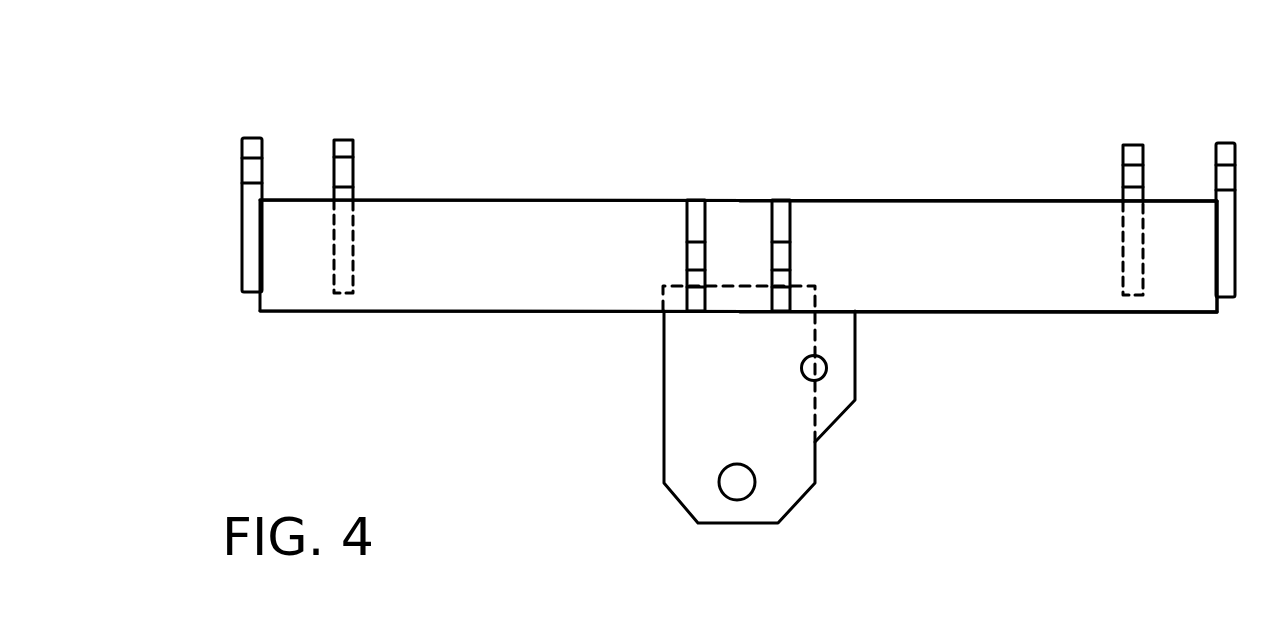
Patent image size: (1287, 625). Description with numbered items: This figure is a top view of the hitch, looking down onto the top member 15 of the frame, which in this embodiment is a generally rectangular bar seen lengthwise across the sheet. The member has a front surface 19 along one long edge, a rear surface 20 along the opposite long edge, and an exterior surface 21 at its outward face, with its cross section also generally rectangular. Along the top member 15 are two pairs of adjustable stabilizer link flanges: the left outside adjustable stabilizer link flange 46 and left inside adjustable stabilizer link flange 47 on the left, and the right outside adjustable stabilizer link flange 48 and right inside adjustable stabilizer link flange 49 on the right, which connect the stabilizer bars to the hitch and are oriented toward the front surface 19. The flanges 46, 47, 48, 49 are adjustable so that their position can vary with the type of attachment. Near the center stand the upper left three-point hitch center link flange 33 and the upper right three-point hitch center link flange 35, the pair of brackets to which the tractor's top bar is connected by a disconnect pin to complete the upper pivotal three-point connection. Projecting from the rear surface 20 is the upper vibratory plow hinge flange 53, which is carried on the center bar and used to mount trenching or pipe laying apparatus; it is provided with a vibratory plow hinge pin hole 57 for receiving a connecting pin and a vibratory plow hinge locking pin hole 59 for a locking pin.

The top member 15 is at (1005, 257).
The front surface 19 is at (568, 200).
The rear surface 20 is at (540, 311).
The exterior surface 21 is at (494, 257).
The upper left three-point hitch center link flange 33 is at (697, 200).
The upper right three-point hitch center link flange 35 is at (780, 200).
The left outside adjustable stabilizer link flange 46 is at (250, 138).
The left inside adjustable stabilizer link flange 47 is at (343, 140).
The right outside adjustable stabilizer link flange 48 is at (1227, 143).
The right inside adjustable stabilizer link flange 49 is at (1131, 145).
The upper vibratory plow hinge flange 53 is at (684, 413).
The vibratory plow hinge pin hole 57 is at (750, 496).
The vibratory plow hinge locking pin hole 59 is at (823, 377).